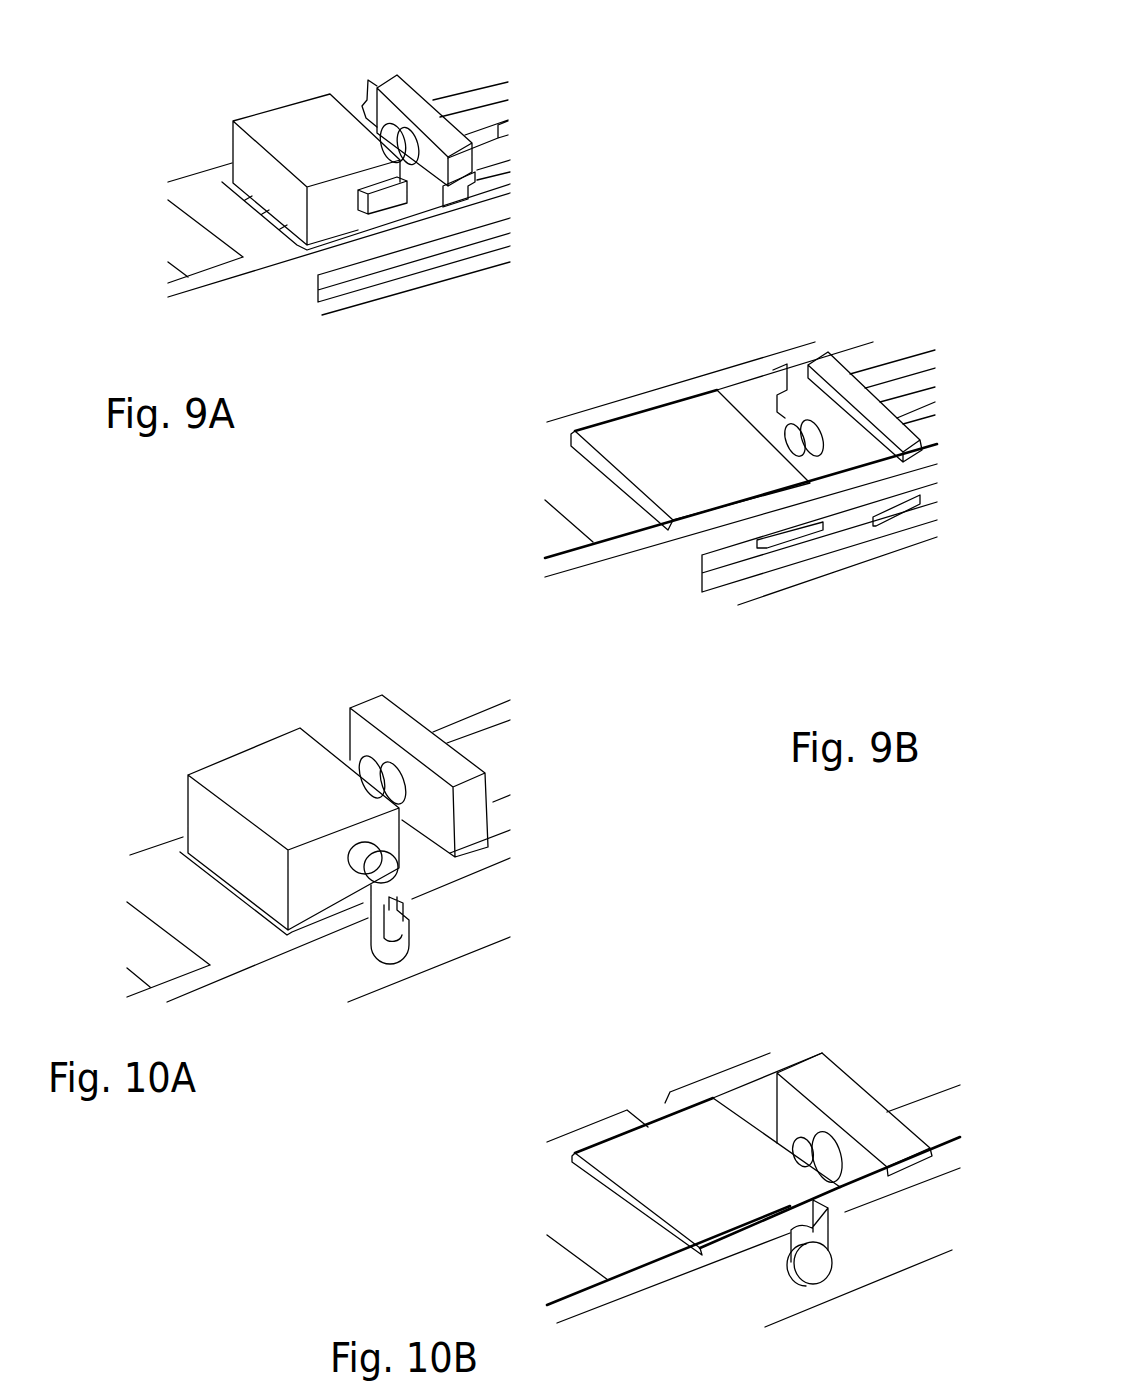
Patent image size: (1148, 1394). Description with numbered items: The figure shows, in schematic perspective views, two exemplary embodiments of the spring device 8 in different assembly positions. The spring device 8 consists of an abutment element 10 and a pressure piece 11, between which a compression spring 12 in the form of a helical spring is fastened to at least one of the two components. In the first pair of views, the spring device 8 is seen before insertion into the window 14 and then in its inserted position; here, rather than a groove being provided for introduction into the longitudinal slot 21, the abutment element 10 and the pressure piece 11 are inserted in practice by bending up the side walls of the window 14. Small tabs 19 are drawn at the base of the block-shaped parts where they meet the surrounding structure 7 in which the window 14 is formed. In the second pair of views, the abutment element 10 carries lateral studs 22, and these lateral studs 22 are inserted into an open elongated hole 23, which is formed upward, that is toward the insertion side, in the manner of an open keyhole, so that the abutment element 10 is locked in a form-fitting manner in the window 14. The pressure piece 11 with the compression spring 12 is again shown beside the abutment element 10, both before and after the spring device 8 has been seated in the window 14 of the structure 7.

In FIG. 9A, the housing base 7 is at (200, 192).
In FIG. 9B, the housing base 7 is at (593, 495).
In FIG. 10A, the housing base 7 is at (192, 912).
In FIG. 10B, the housing base 7 is at (633, 1252).
In FIG. 9A, the spring device 8 is at (295, 75).
In FIG. 9B, the spring device 8 is at (669, 360).
In FIG. 10A, the spring device 8 is at (249, 715).
In FIG. 10B, the spring device 8 is at (633, 1068).
In FIG. 9A, the abutment element 10 is at (275, 125).
In FIG. 9B, the abutment element 10 is at (663, 435).
In FIG. 10A, the abutment element 10 is at (253, 798).
In FIG. 10B, the abutment element 10 is at (640, 1157).
In FIG. 9A, the pressure piece 11 is at (403, 98).
In FIG. 9B, the pressure piece 11 is at (815, 393).
In FIG. 10A, the pressure piece 11 is at (390, 727).
In FIG. 10B, the pressure piece 11 is at (813, 1082).
In FIG. 9A, the compression spring 12 is at (388, 138).
In FIG. 9B, the compression spring 12 is at (800, 432).
In FIG. 10A, the compression spring 12 is at (373, 765).
In FIG. 10B, the compression spring 12 is at (802, 1148).
In FIG. 9A, the window 14 is at (500, 160).
In FIG. 9B, the window 14 is at (908, 413).
In FIG. 10A, the window 14 is at (492, 802).
In FIG. 10B, the window 14 is at (748, 1113).
In FIG. 9A, the latching tab 19 is at (460, 176).
In FIG. 9B, the latching tab 19 is at (902, 502).
In FIG. 9A, the longitudinal slot 21 is at (422, 263).
In FIG. 9B, the longitudinal slot 21 is at (727, 555).
In FIG. 10A, the lateral studs 22 is at (375, 865).
In FIG. 10B, the lateral studs 22 is at (807, 1260).
In FIG. 10A, the open elongated hole 23 is at (385, 947).
In FIG. 10B, the open elongated hole 23 is at (825, 1280).